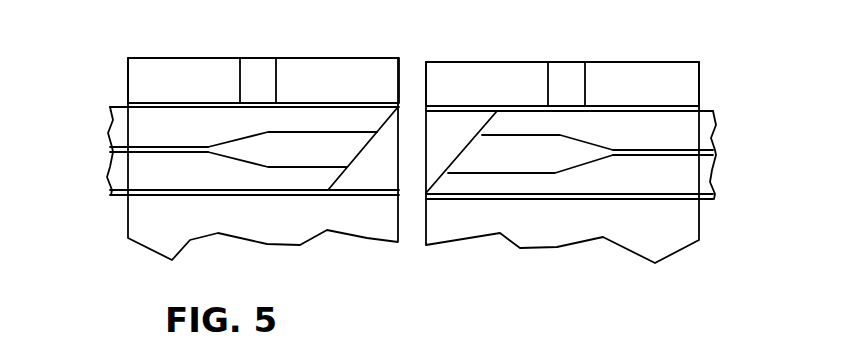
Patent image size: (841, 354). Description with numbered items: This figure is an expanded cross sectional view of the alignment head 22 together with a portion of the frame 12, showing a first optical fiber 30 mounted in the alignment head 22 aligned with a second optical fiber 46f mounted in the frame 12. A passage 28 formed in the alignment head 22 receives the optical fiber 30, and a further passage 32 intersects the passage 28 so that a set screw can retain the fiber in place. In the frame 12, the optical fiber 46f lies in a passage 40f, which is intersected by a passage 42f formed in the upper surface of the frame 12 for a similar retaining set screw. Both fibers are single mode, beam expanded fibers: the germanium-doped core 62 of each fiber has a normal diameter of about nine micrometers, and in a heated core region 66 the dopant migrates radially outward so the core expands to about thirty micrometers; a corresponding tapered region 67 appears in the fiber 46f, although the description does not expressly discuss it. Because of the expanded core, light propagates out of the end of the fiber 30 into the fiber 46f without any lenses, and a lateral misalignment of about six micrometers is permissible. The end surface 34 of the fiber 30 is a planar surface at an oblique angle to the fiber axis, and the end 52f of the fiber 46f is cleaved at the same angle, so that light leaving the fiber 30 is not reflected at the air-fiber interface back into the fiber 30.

The frame 12 is at (700, 228).
The alignment head 22 is at (127, 220).
The passage 28 is at (160, 193).
The optical fiber 30 is at (187, 104).
The passage 32 is at (274, 63).
The end surface 34 is at (356, 150).
The core 62 is at (135, 146).
The core region 66 is at (355, 133).
The tapered waveguide 67 is at (522, 133).
The passage 40f is at (663, 198).
The passage 42f is at (585, 77).
The optical fiber 46f is at (672, 112).
The end 52f is at (466, 148).